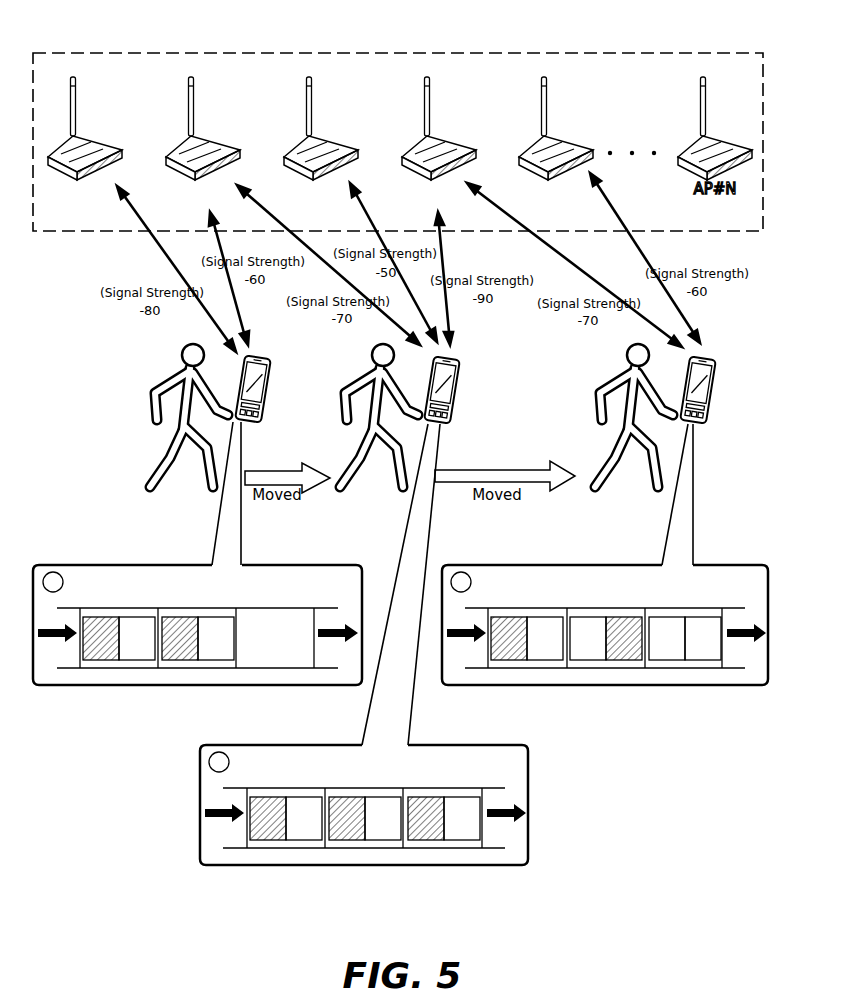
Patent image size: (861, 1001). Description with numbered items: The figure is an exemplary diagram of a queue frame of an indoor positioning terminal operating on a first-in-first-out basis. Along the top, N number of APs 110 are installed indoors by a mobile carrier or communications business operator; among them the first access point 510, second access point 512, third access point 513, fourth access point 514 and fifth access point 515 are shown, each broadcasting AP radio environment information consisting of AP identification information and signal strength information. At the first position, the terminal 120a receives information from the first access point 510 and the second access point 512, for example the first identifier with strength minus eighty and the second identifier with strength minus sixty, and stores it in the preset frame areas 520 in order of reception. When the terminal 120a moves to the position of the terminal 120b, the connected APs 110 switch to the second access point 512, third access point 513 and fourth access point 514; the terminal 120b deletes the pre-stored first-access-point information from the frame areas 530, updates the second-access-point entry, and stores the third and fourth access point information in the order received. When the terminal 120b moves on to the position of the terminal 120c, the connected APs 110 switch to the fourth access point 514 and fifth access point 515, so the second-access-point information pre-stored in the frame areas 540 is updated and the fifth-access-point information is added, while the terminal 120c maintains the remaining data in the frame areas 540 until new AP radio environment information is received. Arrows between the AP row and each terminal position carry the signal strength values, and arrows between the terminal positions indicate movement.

The APs 110 is at (717, 53).
The AP #1 510 is at (100, 140).
The AP #2 512 is at (218, 140).
The AP #3 513 is at (336, 140).
The AP #4 514 is at (454, 140).
The AP #5 515 is at (571, 140).
The terminal 120a is at (274, 376).
The terminal 120b is at (463, 376).
The terminal 120c is at (719, 376).
The frame areas 520 is at (322, 565).
The frame areas 530 is at (487, 745).
The frame areas 540 is at (727, 565).